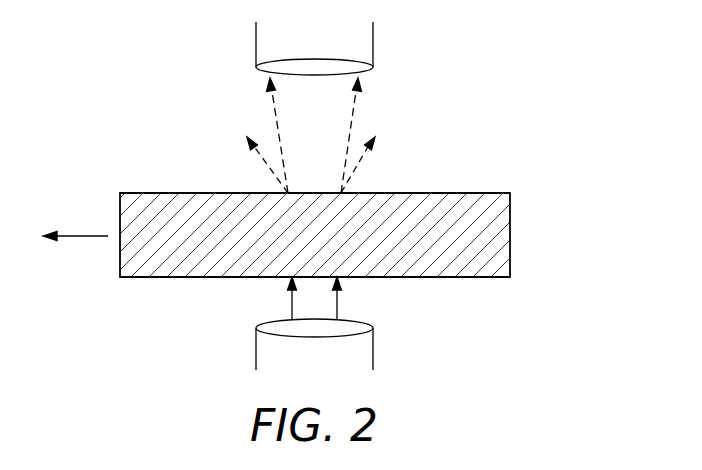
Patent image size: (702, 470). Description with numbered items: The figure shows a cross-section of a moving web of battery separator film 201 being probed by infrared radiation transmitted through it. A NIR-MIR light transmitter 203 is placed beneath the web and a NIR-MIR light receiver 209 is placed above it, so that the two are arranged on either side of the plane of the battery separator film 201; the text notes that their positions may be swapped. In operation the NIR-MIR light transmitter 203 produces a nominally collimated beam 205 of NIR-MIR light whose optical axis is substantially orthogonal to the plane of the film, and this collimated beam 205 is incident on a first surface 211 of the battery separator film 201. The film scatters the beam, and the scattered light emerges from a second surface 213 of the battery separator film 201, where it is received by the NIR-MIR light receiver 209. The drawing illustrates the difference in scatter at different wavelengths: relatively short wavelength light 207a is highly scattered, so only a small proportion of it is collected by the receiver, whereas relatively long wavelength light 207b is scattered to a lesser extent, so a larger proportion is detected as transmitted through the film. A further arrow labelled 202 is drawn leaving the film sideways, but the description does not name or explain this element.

The battery separator film 201 is at (500, 232).
The transmitted light 202 is at (73, 236).
The NIR-MIR light transmitter 203 is at (333, 370).
The collimated beam 205 is at (337, 298).
The relatively short wavelength light 207a is at (383, 143).
The relatively long wavelength light 207b is at (273, 110).
The NIR-MIR light receiver 209 is at (333, 45).
The first surface 211 is at (148, 277).
The second surface 213 is at (493, 193).